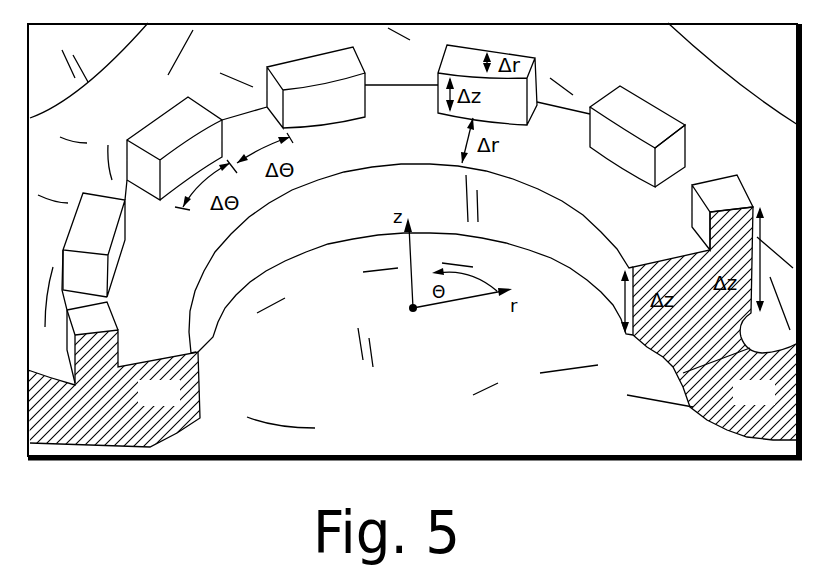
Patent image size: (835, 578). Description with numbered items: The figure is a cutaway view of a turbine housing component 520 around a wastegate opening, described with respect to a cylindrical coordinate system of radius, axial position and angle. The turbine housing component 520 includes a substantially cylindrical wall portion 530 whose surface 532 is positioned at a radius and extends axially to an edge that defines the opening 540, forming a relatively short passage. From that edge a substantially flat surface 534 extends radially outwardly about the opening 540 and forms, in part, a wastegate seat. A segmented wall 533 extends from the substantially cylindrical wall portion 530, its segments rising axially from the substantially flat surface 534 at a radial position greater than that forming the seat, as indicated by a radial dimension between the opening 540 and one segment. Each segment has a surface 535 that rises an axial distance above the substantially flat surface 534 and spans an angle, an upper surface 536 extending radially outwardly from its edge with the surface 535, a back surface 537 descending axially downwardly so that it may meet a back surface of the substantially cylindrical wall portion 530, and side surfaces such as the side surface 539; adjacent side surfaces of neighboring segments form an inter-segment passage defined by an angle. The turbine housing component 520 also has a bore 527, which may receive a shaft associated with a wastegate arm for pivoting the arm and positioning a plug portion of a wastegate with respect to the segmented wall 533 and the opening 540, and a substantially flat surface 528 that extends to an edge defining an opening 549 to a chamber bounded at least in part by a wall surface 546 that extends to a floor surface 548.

The turbine housing component 520 is at (770, 402).
The bore 527 is at (118, 57).
The substantially flat surface 528 is at (733, 74).
The substantially cylindrical wall portion 530 is at (175, 404).
The surface 532 is at (306, 241).
The segmented wall 533 is at (415, 164).
The substantially flat surface 534 is at (620, 204).
The surface 535 is at (628, 150).
The upper surface 536 is at (647, 110).
The back surface 537 is at (755, 205).
The side surface 539 is at (667, 172).
The opening 540 is at (655, 323).
The wall surface 546 is at (638, 57).
The floor surface 548 is at (683, 372).
The opening 549 is at (763, 102).